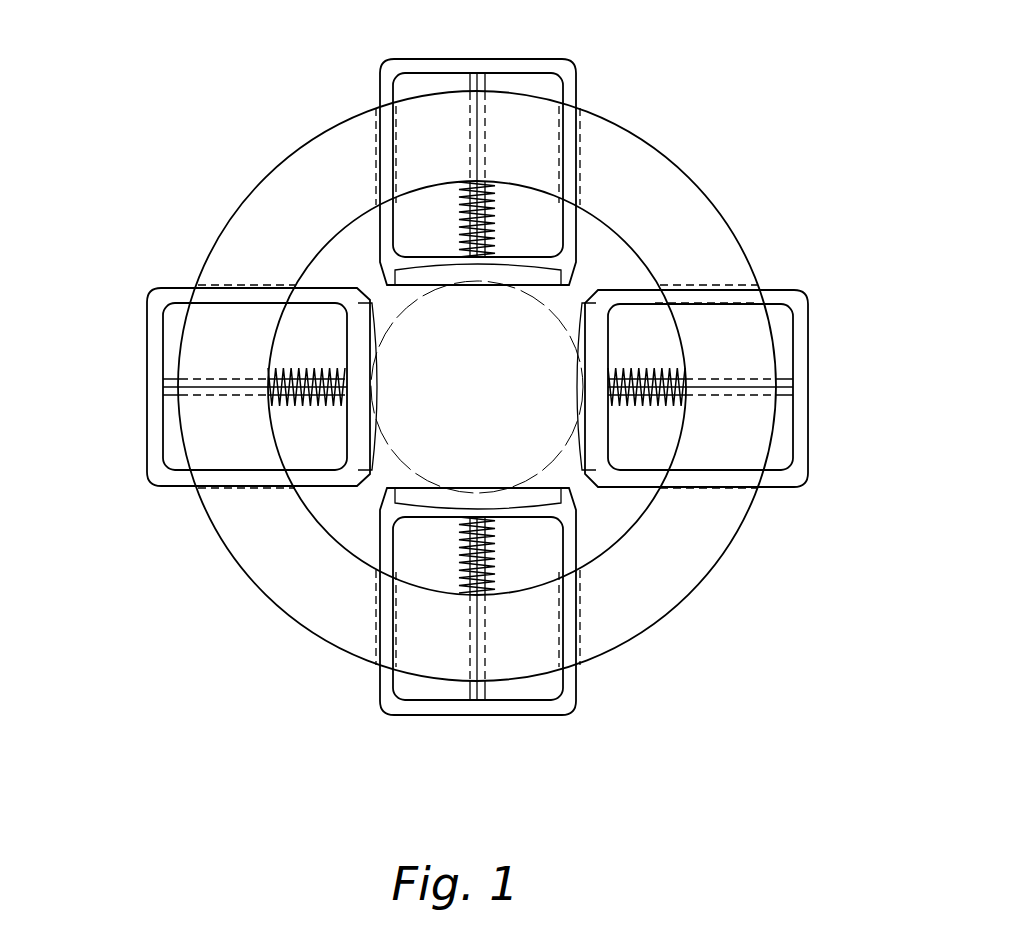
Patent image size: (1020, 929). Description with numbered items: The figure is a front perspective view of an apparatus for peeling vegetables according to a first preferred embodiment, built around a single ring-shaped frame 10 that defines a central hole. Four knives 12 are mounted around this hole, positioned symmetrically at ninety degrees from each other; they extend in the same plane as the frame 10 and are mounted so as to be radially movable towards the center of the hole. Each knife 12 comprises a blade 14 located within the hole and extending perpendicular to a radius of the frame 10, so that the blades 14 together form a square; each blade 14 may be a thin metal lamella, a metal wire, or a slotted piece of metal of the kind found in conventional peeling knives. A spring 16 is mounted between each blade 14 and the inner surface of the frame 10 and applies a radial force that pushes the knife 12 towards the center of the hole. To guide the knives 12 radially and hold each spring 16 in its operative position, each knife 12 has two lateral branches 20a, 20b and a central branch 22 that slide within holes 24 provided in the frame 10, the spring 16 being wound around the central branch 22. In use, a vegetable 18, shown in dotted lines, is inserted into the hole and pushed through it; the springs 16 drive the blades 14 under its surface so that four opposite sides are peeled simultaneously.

The ring-shaped frame 10 is at (296, 589).
The knife 12 is at (528, 58).
The blade 14 is at (412, 286).
The spring 16 is at (488, 229).
The vegetable 18 is at (584, 483).
The lateral branch 20a is at (612, 300).
The lateral branch 20b is at (614, 470).
The central branch 22 is at (784, 395).
The hole 24 is at (733, 285).